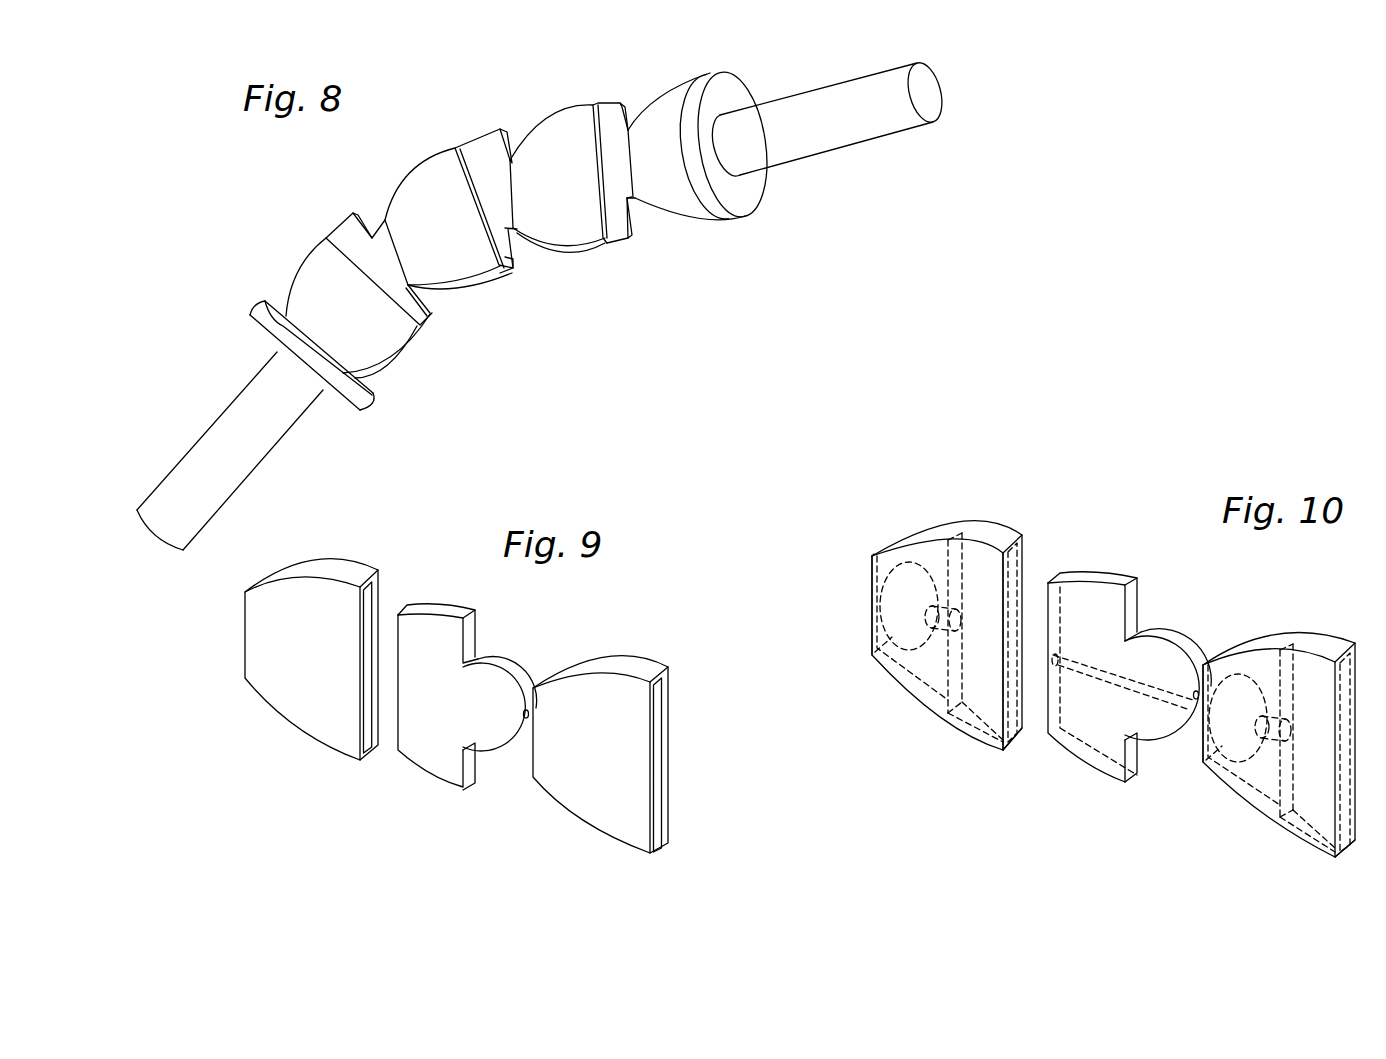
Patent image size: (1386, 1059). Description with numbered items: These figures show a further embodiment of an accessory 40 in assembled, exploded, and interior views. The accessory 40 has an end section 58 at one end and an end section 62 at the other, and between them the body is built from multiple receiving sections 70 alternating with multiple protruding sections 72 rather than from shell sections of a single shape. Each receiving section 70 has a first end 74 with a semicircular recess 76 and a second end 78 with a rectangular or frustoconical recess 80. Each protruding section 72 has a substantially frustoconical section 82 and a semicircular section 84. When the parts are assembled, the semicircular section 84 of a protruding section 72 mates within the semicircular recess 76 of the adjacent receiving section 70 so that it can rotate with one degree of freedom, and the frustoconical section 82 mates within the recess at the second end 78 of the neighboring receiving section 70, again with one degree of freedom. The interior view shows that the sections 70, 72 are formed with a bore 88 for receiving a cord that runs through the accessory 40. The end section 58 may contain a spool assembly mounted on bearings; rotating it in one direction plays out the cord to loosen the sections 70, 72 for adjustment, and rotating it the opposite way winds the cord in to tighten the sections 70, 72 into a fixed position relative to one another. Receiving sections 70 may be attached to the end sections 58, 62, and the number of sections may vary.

In FIG. 8, the accessory 40 is at (222, 227).
In FIG. 8, the end section 58 is at (196, 450).
In FIG. 8, the end section 62 is at (808, 105).
In FIG. 8, the receiving section 70 is at (308, 272).
In FIG. 9, the receiving section 70 is at (315, 639).
In FIG. 10, the receiving section 70 is at (938, 535).
In FIG. 8, the protruding section 72 is at (352, 220).
In FIG. 9, the protruding section 72 is at (445, 620).
In FIG. 10, the protruding section 72 is at (1088, 587).
In FIG. 10, the first end 74 is at (872, 562).
In FIG. 10, the semicircular recess 76 is at (866, 585).
In FIG. 10, the second end 78 is at (1026, 556).
In FIG. 9, the rectangular or frustoconical recess 80 is at (386, 594).
In FIG. 10, the rectangular or frustoconical recess 80 is at (1020, 735).
In FIG. 9, the frustoconical section 82 is at (440, 695).
In FIG. 10, the frustoconical section 82 is at (1132, 594).
In FIG. 9, the semicircular section 84 is at (503, 724).
In FIG. 10, the semicircular section 84 is at (1160, 640).
In FIG. 10, the channel 88 is at (1095, 662).